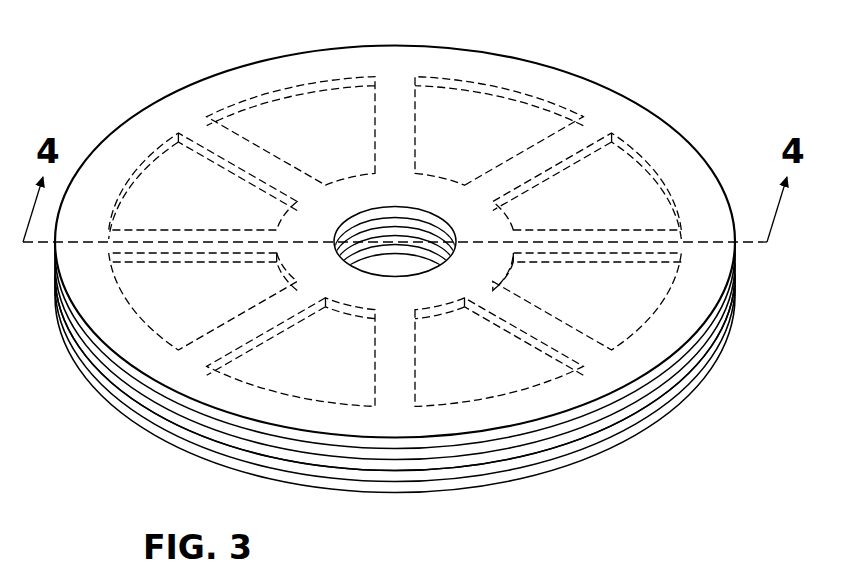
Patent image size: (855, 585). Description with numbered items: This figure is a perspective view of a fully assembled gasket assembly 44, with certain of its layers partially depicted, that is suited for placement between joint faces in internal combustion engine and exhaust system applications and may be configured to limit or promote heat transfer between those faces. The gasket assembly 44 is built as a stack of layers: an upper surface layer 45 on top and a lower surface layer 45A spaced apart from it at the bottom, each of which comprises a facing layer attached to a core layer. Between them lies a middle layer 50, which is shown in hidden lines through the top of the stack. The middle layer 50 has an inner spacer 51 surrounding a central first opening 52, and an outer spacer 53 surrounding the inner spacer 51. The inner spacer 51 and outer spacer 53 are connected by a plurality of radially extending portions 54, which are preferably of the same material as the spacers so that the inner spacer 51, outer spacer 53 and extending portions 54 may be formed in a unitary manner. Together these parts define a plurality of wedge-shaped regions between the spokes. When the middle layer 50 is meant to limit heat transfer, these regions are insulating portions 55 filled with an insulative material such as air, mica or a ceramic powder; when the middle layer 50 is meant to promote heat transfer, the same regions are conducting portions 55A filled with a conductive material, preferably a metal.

The gasket assembly 44 is at (108, 80).
The upper surface layer 45 is at (602, 407).
The lower surface layer 45A is at (672, 398).
The middle layer 50 is at (185, 320).
The inner spacer 51 is at (350, 197).
The first opening 52 is at (412, 222).
The outer spacer 53 is at (267, 448).
The extending portions 54 is at (390, 342).
The insulating portions 55 is at (520, 357).
The conducting portions 55A is at (607, 322).